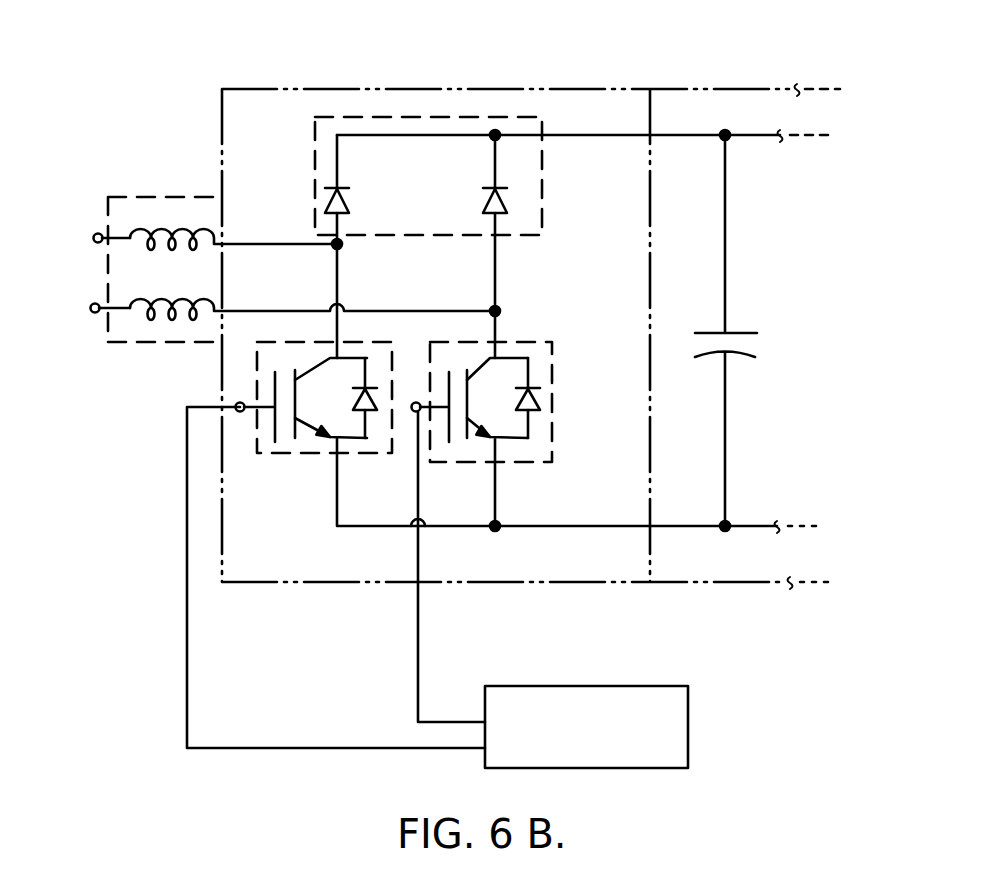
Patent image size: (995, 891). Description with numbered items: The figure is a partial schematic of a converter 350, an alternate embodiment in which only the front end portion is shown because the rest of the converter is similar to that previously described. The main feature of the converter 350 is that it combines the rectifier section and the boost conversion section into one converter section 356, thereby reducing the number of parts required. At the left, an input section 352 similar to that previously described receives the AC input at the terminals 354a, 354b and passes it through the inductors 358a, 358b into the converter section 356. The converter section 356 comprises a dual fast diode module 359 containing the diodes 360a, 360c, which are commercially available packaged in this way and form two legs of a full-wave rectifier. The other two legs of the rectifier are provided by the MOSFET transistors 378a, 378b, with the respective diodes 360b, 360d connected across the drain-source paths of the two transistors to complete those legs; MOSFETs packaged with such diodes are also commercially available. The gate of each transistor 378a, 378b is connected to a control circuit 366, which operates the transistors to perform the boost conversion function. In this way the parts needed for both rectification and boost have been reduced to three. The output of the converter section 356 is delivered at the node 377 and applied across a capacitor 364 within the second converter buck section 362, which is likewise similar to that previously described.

The converter 350 is at (262, 751).
The input section 352 is at (170, 197).
The input terminal 354a is at (93, 239).
The input terminal 354b is at (95, 314).
The converter section 356 is at (488, 33).
The inductor 358a is at (199, 244).
The inductor 358b is at (193, 318).
The dual fast diode module 359 is at (540, 232).
The diode 360a is at (324, 208).
The diode 360b is at (368, 385).
The diode 360c is at (504, 205).
The diode 360d is at (533, 386).
The second converter buck section 362 is at (780, 84).
The capacitor 364 is at (736, 354).
The control circuit 366 is at (690, 718).
The node 377 is at (724, 132).
The MOSFET transistor 378a is at (324, 456).
The MOSFET transistor 378b is at (535, 462).